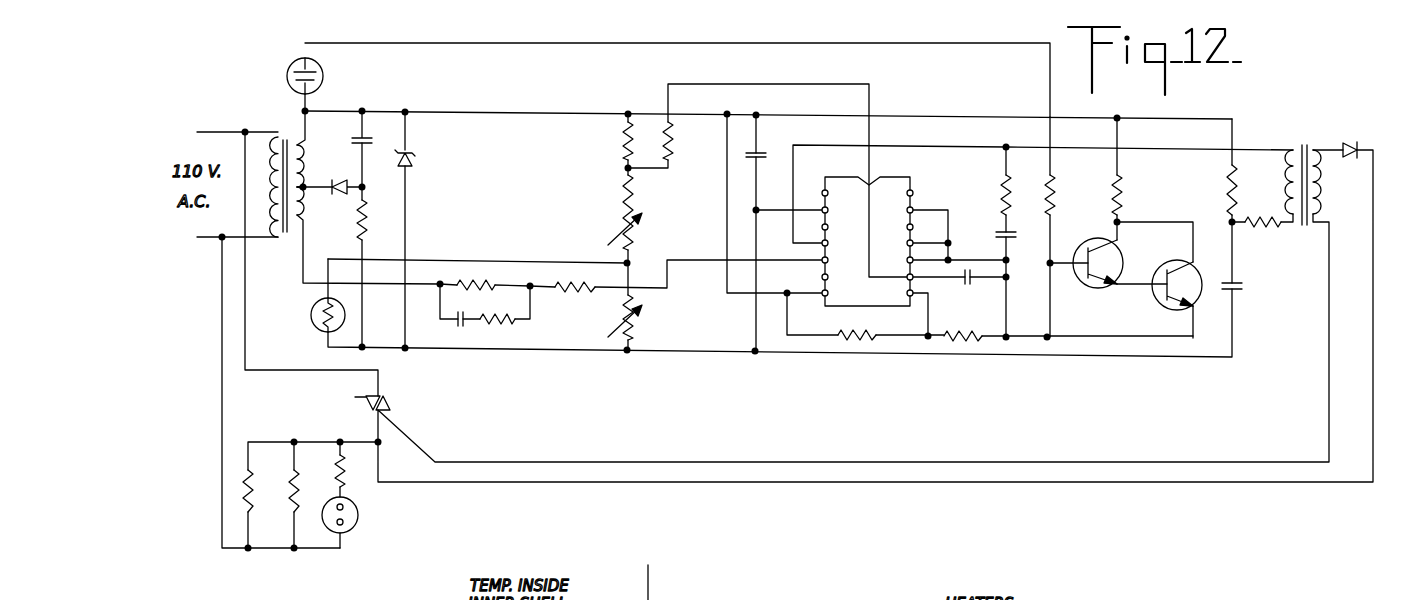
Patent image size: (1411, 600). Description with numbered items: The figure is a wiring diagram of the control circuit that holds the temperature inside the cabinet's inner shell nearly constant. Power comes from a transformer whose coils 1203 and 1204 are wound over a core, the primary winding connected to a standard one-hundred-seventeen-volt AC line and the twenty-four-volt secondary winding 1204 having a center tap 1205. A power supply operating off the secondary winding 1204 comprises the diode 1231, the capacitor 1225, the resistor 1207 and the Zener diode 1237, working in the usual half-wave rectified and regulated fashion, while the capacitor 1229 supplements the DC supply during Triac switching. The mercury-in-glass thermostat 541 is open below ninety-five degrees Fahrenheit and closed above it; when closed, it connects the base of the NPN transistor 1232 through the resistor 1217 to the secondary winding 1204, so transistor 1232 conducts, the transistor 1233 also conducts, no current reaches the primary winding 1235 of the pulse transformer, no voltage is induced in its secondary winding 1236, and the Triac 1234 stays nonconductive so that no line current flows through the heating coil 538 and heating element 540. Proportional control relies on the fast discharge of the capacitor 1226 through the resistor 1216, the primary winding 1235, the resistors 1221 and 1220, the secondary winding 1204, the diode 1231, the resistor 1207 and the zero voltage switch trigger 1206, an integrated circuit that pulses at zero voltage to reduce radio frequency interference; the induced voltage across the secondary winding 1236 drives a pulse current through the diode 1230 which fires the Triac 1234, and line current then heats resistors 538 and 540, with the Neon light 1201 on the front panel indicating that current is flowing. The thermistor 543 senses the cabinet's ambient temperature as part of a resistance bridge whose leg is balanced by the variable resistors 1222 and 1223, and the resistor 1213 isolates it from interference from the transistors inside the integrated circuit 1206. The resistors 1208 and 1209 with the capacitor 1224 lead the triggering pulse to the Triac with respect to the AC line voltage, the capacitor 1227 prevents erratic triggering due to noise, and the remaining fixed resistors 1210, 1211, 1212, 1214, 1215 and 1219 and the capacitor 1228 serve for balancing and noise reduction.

The resistor 538 is at (244, 492).
The resistor 540 is at (290, 466).
The mercury-in-glass thermostat 541 is at (292, 70).
The thermistor 543 is at (310, 318).
The Neon light 1201 is at (359, 521).
The coil 1203 is at (275, 135).
The coil 1204 is at (302, 152).
The center tap 1205 is at (332, 180).
The zero voltage switch trigger 1206 is at (890, 180).
The resistor 1207 is at (370, 224).
The resistor 1208 is at (503, 252).
The resistor 1209 is at (505, 326).
The resistor 1210 is at (596, 296).
The resistor 1211 is at (625, 190).
The resistor 1212 is at (625, 146).
The resistor 1213 is at (672, 140).
The resistor 1214 is at (855, 340).
The resistor 1215 is at (958, 341).
The resistor 1216 is at (1000, 187).
The resistor 1217 is at (1056, 195).
The resistor 1219 is at (1123, 196).
The resistor 1220 is at (1224, 186).
The resistor 1221 is at (1280, 238).
The variable resistor 1222 is at (644, 235).
The variable resistor 1223 is at (645, 329).
The capacitor 1224 is at (462, 330).
The capacitor 1225 is at (368, 130).
The capacitor 1226 is at (994, 231).
The capacitor 1227 is at (965, 291).
The capacitor 1228 is at (1243, 288).
The capacitor 1229 is at (790, 140).
The diode 1230 is at (1350, 146).
The diode 1231 is at (352, 205).
The NPN transistor 1232 is at (1121, 250).
The NPN transistor 1233 is at (1156, 300).
The Triac 1234 is at (390, 400).
The primary winding 1235 is at (1289, 148).
The secondary winding 1236 is at (1315, 146).
The Zener diode 1237 is at (413, 158).